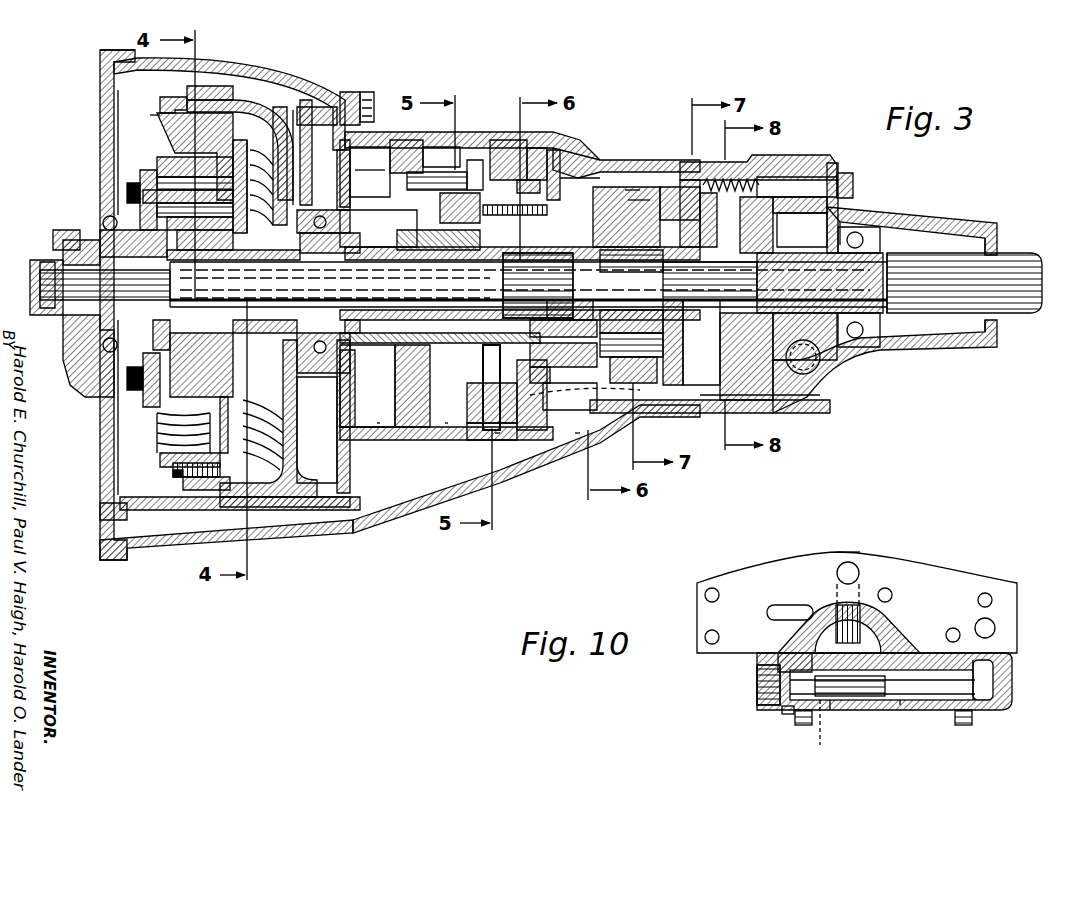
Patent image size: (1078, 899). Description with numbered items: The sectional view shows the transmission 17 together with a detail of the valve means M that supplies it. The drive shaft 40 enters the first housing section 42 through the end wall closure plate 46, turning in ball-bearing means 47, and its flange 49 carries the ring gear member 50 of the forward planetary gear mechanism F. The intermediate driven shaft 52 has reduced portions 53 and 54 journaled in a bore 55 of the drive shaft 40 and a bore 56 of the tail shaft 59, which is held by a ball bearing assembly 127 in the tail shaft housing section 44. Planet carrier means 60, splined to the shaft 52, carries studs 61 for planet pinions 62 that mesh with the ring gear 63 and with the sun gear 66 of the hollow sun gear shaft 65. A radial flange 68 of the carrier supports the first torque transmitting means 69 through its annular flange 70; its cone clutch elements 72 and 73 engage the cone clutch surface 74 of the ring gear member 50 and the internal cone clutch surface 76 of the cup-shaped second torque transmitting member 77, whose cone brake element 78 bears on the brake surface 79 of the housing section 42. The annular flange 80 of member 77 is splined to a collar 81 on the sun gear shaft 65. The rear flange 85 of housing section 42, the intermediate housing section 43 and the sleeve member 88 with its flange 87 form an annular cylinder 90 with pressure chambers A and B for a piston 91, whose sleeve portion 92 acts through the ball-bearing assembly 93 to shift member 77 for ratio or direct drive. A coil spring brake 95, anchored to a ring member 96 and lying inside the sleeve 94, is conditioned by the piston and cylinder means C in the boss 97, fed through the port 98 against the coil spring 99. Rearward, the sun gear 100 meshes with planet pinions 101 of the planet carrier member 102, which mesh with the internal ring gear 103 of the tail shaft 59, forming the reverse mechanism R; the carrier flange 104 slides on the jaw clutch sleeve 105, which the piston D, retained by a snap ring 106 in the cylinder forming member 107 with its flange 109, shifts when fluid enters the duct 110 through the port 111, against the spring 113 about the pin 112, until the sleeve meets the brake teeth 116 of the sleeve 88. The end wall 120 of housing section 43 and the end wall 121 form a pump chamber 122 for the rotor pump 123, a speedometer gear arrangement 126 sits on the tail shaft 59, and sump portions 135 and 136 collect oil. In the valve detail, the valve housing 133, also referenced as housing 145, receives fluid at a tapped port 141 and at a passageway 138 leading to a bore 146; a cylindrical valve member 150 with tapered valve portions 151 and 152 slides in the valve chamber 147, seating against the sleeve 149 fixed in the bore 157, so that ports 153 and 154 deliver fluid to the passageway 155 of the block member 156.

In FIG. 3, the transmission 17 is at (135, 55).
In FIG. 3, the drive shaft 40 is at (30, 295).
In FIG. 3, the first housing section 42 is at (213, 68).
In FIG. 3, the intermediate housing section 43 is at (378, 148).
In FIG. 3, the tail shaft housing section 44 is at (818, 166).
In FIG. 3, the end wall closure plate 46 is at (100, 92).
In FIG. 3, the ball-bearing means 47 is at (100, 345).
In FIG. 3, the radially outwardly extending flange 49 is at (140, 183).
In FIG. 3, the ring gear member 50 is at (130, 178).
In FIG. 3, the intermediate driven shaft 52 is at (528, 284).
In FIG. 3, the reduced forward cylindrical portion 53 is at (60, 316).
In FIG. 3, the reduced rearward cylindrical portion 54 is at (700, 348).
In FIG. 3, the bore 55 is at (40, 265).
In FIG. 3, the bore 56 is at (768, 235).
In FIG. 3, the tail shaft 59 is at (1005, 305).
In FIG. 3, the planet carrier means 60 is at (90, 377).
In FIG. 3, the studs 61 is at (225, 201).
In FIG. 3, the planet pinions 62 is at (185, 150).
In FIG. 3, the ring gear 63 is at (158, 432).
In FIG. 3, the hollow sun gear shaft 65 is at (255, 340).
In FIG. 3, the sun gear 66 is at (160, 402).
In FIG. 3, the radial flange 68 is at (240, 397).
In FIG. 3, the first torque transmitting means 69 is at (173, 474).
In FIG. 3, the inwardly extending annular flange 70 is at (297, 442).
In FIG. 3, the internal friction cone clutch element 72 is at (173, 466).
In FIG. 3, the external friction cone clutch element 73 is at (183, 482).
In FIG. 3, the external cone clutch surface 74 is at (163, 113).
In FIG. 3, the internal cone clutch surface 76 is at (303, 112).
In FIG. 3, the second torque transmitting member 77 is at (290, 102).
In FIG. 3, the cone brake element 78 is at (262, 98).
In FIG. 3, the conical brake surface 79 is at (252, 88).
In FIG. 3, the radially inwardly extending annular flange 80 is at (297, 228).
In FIG. 3, the collar 81 is at (520, 265).
In FIG. 3, the radially inwardly extending annular flange 85 is at (337, 178).
In FIG. 3, the enlarged radially extending annular flange 87 is at (492, 140).
In FIG. 3, the sleeve member 88 is at (455, 380).
In FIG. 3, the annular cylinder 90 is at (365, 173).
In FIG. 3, the piston 91 is at (422, 162).
In FIG. 3, the forwardly extending sleeve portion 92 is at (370, 181).
In FIG. 3, the ball-bearing assembly 93 is at (323, 413).
In FIG. 3, the axially extending sleeve 94 is at (390, 348).
In FIG. 3, the coil spring brake 95 is at (388, 362).
In FIG. 3, the ring member 96 is at (518, 366).
In FIG. 3, the enlarged boss portion 97 is at (466, 408).
In FIG. 3, the port 98 is at (480, 437).
In FIG. 3, the coil spring 99 is at (547, 398).
In FIG. 3, the sun gear 100 is at (635, 235).
In FIG. 3, the planet pinions 101 is at (672, 400).
In FIG. 3, the planet carrier member 102 is at (632, 215).
In FIG. 3, the internal ring gear 103 is at (628, 200).
In FIG. 3, the annular flange 104 is at (625, 190).
In FIG. 3, the jaw clutch sleeve 105 is at (620, 440).
In FIG. 3, the snap ring 106 is at (575, 196).
In FIG. 3, the cylinder forming member 107 is at (548, 150).
In FIG. 3, the radially outwardly extending flange 109 is at (520, 432).
In FIG. 3, the duct 110 is at (530, 148).
In FIG. 3, the port 111 is at (520, 140).
In FIG. 3, the pin 112 is at (597, 160).
In FIG. 3, the spring 113 is at (595, 148).
In FIG. 3, the internal brake teeth 116 is at (535, 295).
In FIG. 3, the end wall 120 is at (730, 400).
In FIG. 3, the end wall 121 is at (790, 182).
In FIG. 3, the pump chamber 122 is at (735, 177).
In FIG. 3, the rotor pump 123 is at (790, 407).
In FIG. 3, the speedometer gear arrangement 126 is at (810, 365).
In FIG. 3, the ball bearing assembly 127 is at (866, 208).
In FIG. 10, the valve housing 133 is at (985, 712).
In FIG. 3, the sump portion 135 is at (262, 518).
In FIG. 3, the sump portion 136 is at (372, 497).
In FIG. 10, the fluid passageway 138 is at (990, 677).
In FIG. 10, the tapped port 141 is at (757, 692).
In FIG. 10, the valve housing 145 is at (833, 710).
In FIG. 10, the bore 146 is at (940, 710).
In FIG. 10, the valve receiving bore 147 is at (836, 733).
In FIG. 10, the sleeve 149 is at (790, 712).
In FIG. 10, the cylindrical valve member 150 is at (848, 700).
In FIG. 10, the tapered valve portion 151 is at (775, 655).
In FIG. 10, the tapered valve portion 152 is at (890, 705).
In FIG. 10, the port 153 is at (808, 642).
In FIG. 10, the port 154 is at (890, 640).
In FIG. 10, the passageway 155 is at (866, 628).
In FIG. 10, the block member 156 is at (740, 577).
In FIG. 10, the bore 157 is at (780, 712).
In FIG. 3, the pressure chamber A is at (377, 423).
In FIG. 3, the pressure chamber B is at (445, 423).
In FIG. 3, the piston and cylinder means C is at (497, 433).
In FIG. 3, the piston D is at (577, 433).
In FIG. 3, the forward drive planetary gear mechanism F is at (150, 118).
In FIG. 3, the reverse planetary gear mechanism R is at (636, 400).
In FIG. 10, the control valve means M is at (858, 552).